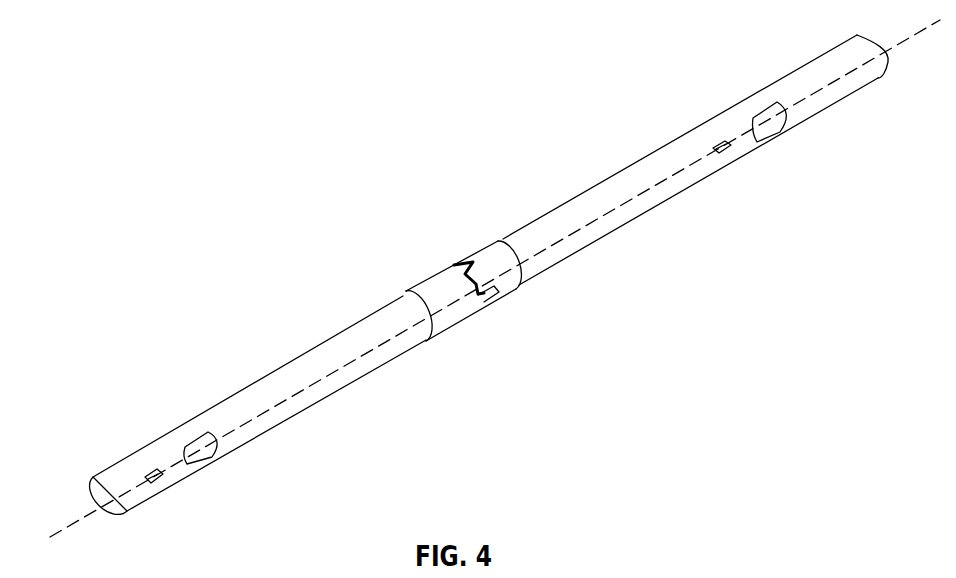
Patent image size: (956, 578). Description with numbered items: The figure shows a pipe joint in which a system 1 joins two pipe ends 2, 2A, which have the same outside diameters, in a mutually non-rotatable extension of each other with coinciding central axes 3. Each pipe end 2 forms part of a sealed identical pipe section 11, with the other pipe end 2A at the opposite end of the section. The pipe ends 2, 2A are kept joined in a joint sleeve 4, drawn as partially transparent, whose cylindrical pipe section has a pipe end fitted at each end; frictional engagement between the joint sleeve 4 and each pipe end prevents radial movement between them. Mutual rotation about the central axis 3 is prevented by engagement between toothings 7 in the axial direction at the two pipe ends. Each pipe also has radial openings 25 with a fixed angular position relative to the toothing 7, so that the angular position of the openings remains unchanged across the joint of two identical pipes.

The system for joining two pipe ends 1 is at (294, 284).
The pipe end 2 is at (388, 350).
The pipe end 2A is at (538, 258).
The central axis 3 is at (71, 527).
The joint sleeve 4 is at (432, 290).
The toothing 7 is at (483, 294).
The pipe section 11 is at (265, 382).
The radial opening 25 is at (203, 452).